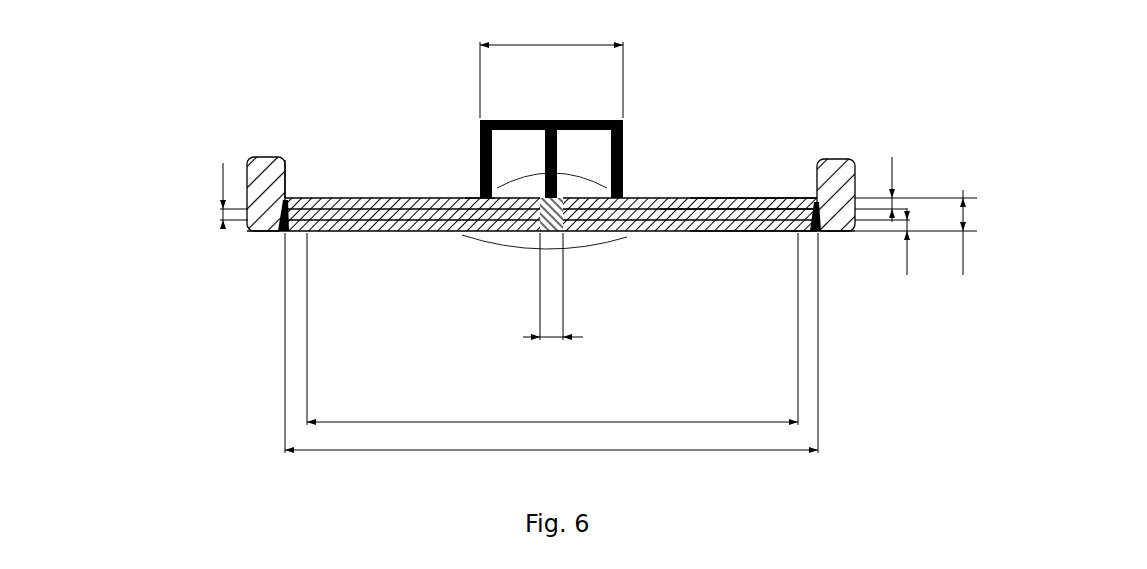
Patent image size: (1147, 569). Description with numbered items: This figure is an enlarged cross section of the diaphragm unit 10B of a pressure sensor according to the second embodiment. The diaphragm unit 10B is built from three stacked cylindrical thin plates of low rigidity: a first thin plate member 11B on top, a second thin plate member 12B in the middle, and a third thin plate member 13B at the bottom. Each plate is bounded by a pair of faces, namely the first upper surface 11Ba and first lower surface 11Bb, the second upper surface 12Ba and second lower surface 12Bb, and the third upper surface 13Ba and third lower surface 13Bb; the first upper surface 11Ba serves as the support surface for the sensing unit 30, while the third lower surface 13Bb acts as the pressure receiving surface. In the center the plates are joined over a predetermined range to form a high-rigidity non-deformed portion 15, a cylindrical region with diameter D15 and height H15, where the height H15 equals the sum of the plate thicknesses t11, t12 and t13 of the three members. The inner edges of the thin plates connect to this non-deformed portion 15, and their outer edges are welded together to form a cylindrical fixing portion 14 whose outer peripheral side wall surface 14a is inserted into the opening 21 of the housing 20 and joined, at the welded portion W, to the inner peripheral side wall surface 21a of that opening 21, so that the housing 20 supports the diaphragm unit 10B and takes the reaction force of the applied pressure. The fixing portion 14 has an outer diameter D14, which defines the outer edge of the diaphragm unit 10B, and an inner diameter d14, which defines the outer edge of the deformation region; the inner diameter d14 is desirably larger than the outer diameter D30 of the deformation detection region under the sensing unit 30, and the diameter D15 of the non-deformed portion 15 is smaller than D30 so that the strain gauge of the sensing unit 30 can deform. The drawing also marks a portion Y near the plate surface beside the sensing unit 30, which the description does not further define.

The diaphragm unit 10B is at (555, 229).
The first thin plate member 11B is at (305, 210).
The first upper surface 11Ba is at (717, 198).
The first lower surface 11Bb is at (737, 198).
The second thin plate member 12B is at (308, 220).
The second upper surface 12Ba is at (690, 231).
The second lower surface 12Bb is at (779, 198).
The third thin plate member 13B is at (315, 230).
The third upper surface 13Ba is at (733, 231).
The third lower surface 13Bb is at (750, 231).
The fixing portion 14 is at (316, 240).
The outer peripheral side wall surface 14a is at (288, 195).
The non-deformed portion 15 is at (524, 240).
The housing 20 is at (536, 181).
The opening 21 is at (315, 165).
The inner peripheral side wall surface 21a is at (288, 167).
The sensing unit 30 is at (548, 120).
The welded portion W is at (283, 232).
The region Y is at (477, 198).
The outer diameter of deformation detection region D30 is at (551, 70).
The diameter of non-deformed portion D15 is at (526, 287).
The inner diameter of fixing portion d14 is at (552, 411).
The outer diameter of fixing portion D14 is at (551, 343).
The plate thickness of first thin plate member t11 is at (916, 189).
The plate thickness of second thin plate member t12 is at (222, 194).
The plate thickness of third thin plate member t13 is at (916, 243).
The height of non-deformed portion H15 is at (951, 239).